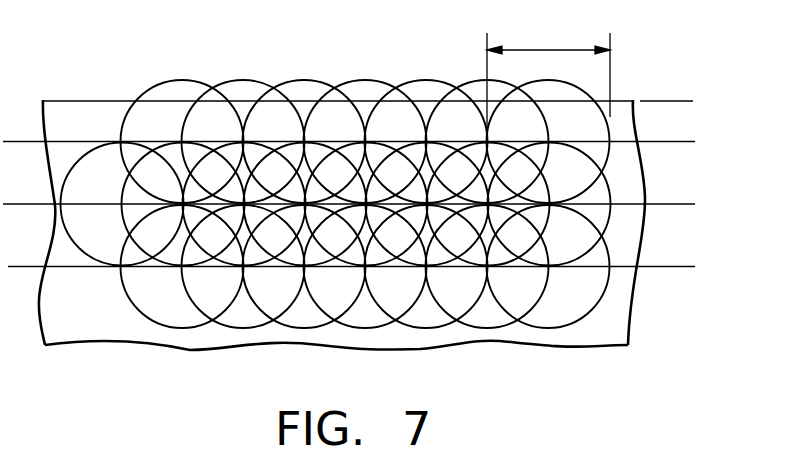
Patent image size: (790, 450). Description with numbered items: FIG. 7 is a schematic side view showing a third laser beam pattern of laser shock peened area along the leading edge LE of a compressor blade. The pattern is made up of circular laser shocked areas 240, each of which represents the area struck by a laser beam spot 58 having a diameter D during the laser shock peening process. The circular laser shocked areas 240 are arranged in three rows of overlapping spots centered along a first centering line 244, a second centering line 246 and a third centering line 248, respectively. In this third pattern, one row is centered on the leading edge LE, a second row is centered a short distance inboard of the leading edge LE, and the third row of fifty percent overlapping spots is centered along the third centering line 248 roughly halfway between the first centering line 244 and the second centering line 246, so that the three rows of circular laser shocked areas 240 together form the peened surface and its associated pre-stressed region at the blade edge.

The laser beam spot 58 is at (242, 80).
The circular laser shocked areas 240 is at (305, 92).
The first centering line 244 is at (663, 142).
The second centering line 246 is at (665, 204).
The third centering line 248 is at (665, 267).
The leading edge LE is at (675, 100).
The diameter D is at (542, 43).